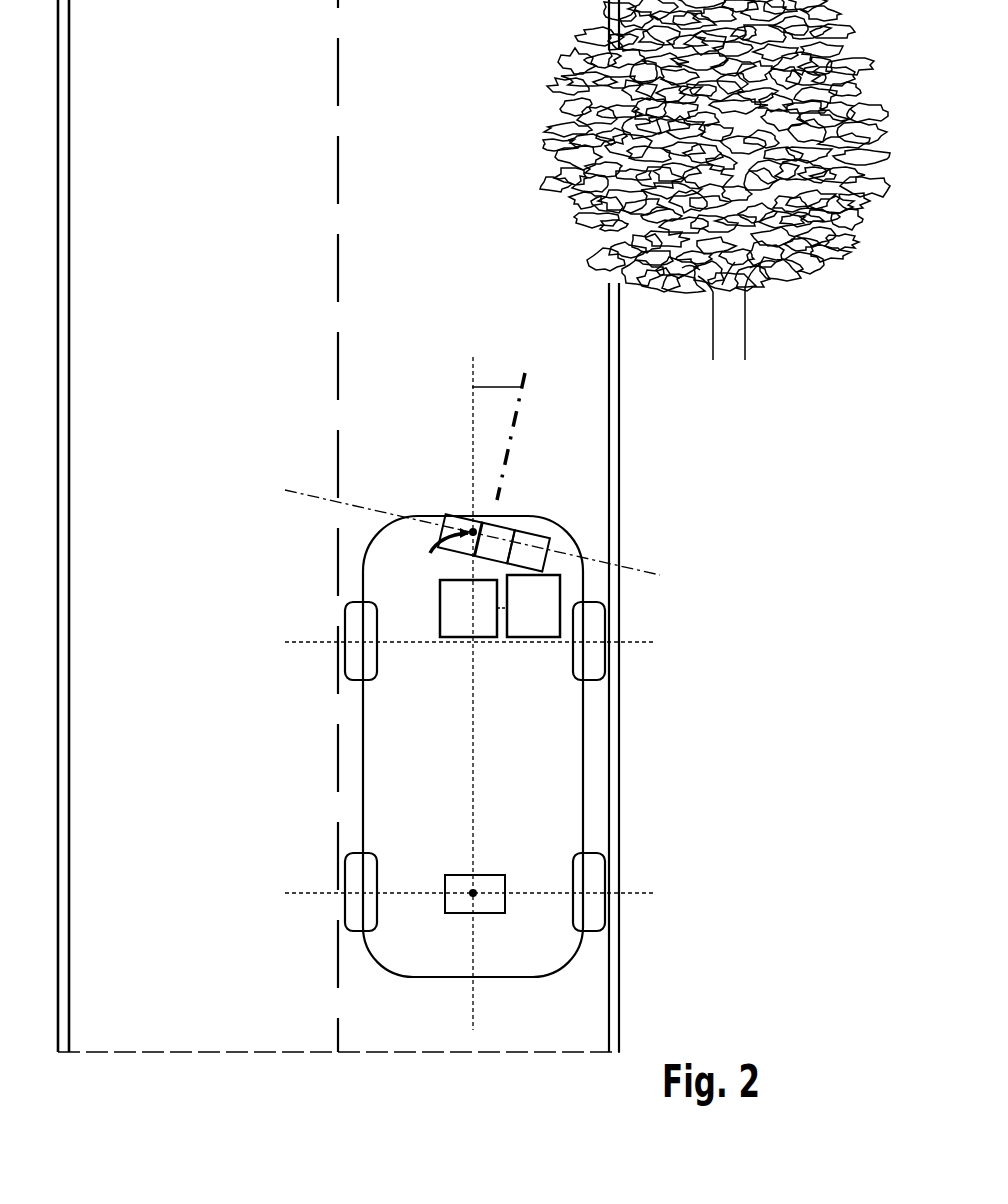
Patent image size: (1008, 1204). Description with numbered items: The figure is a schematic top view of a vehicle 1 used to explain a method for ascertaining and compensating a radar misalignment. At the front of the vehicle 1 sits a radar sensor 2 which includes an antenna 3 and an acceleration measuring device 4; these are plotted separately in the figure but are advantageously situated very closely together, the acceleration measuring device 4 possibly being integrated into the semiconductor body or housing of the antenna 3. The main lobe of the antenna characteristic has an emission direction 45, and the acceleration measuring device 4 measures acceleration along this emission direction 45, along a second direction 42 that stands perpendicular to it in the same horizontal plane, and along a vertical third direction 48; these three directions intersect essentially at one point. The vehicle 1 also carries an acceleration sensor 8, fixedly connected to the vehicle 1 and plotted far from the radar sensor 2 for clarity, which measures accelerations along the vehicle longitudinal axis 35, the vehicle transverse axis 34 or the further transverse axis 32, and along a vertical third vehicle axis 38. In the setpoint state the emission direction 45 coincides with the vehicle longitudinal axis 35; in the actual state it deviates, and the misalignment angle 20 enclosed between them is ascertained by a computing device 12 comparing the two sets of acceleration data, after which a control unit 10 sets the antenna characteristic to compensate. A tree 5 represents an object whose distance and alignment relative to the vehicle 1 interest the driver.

The vehicle 1 is at (588, 778).
The radar sensor 2 is at (529, 522).
The antenna 3 is at (496, 521).
The acceleration measuring device 4 is at (471, 527).
The tree 5 is at (740, 335).
The acceleration sensor 8 is at (495, 873).
The control unit 10 is at (452, 639).
The computing device 12 is at (533, 639).
The misalignment angle 20 is at (497, 387).
The vehicle transverse axis 32 is at (650, 645).
The vehicle transverse axis 34 is at (650, 896).
The vehicle longitudinal axis 35 is at (475, 1000).
The third vehicle axis 38 is at (471, 890).
The second direction 42 is at (300, 490).
The emission direction 45 is at (526, 372).
The third direction 48 is at (424, 600).